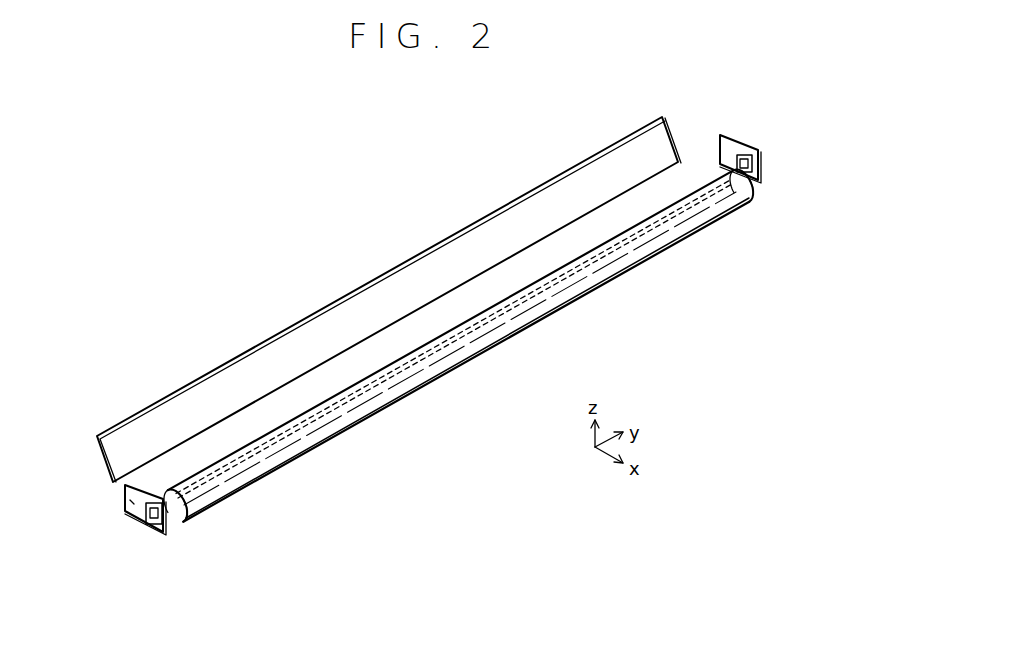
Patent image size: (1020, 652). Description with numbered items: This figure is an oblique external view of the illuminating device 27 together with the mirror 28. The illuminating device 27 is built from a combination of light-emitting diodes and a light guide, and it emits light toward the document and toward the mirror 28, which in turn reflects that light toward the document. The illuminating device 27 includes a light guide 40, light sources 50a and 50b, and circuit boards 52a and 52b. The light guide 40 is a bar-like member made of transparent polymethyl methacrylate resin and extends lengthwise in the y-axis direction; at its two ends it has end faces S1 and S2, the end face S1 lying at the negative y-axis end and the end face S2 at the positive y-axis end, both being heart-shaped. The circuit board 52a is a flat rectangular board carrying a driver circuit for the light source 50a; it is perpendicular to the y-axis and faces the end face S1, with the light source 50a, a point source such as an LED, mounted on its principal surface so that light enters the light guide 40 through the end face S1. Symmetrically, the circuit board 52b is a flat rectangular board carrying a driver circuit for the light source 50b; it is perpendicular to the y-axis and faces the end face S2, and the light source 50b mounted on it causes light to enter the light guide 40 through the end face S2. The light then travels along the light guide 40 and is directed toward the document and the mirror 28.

The illuminating device 27 is at (448, 386).
The mirror 28 is at (405, 263).
The light guide 40 is at (528, 320).
The light source 50a is at (157, 523).
The light source 50b is at (757, 166).
The circuit board 52a is at (128, 504).
The circuit board 52b is at (728, 134).
The end face S1 is at (184, 516).
The end face S2 is at (748, 180).